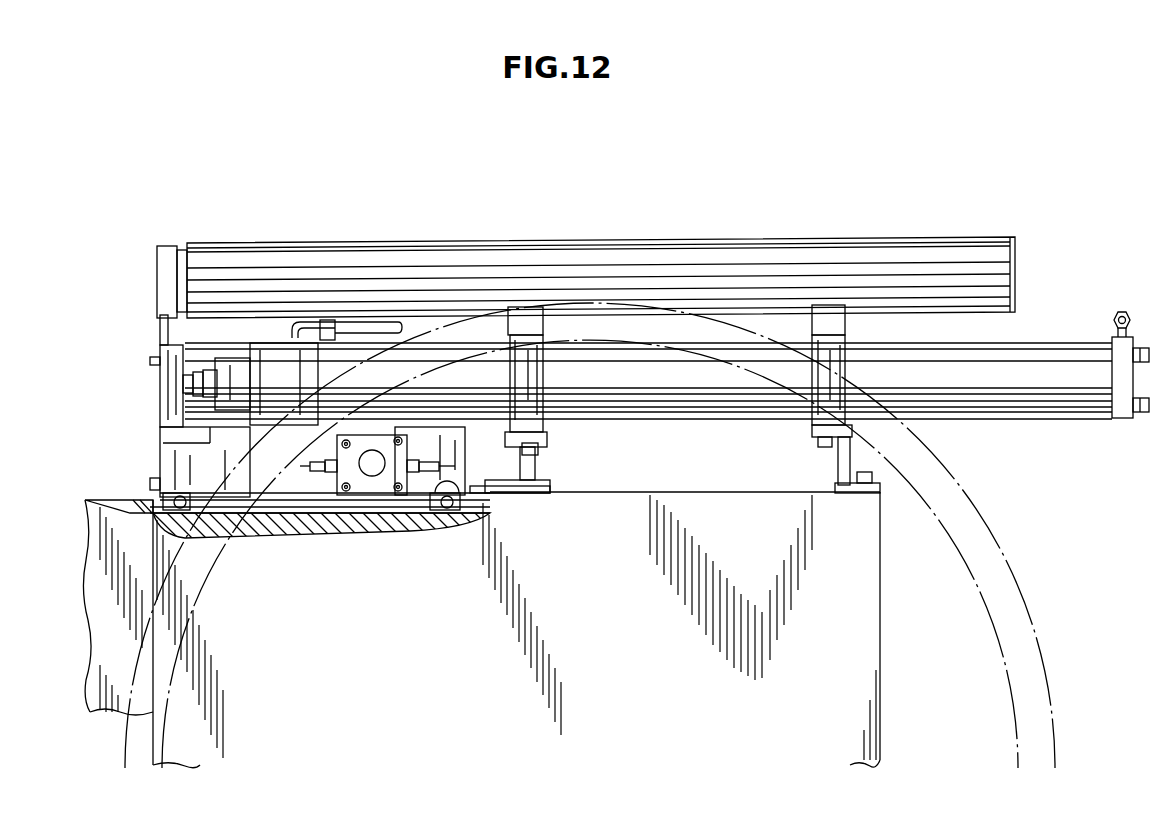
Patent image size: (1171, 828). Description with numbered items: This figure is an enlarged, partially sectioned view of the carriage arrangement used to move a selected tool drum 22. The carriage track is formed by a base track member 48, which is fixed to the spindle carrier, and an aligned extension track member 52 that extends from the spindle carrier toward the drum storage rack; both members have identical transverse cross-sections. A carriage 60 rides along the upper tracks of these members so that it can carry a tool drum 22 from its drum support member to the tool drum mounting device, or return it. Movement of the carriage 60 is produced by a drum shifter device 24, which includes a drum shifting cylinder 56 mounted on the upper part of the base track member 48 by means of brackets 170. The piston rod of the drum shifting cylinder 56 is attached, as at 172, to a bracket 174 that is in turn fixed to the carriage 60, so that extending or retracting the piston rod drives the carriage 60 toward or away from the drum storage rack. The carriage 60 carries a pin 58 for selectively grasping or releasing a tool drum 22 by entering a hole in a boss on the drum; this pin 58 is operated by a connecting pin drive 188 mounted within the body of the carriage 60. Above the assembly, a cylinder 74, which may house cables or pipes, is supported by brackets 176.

The tool drum 22 is at (977, 557).
The drum shifter device 24 is at (203, 222).
The base track member 48 is at (852, 600).
The extension track member 52 is at (130, 518).
The drum shifting cylinder 56 is at (890, 377).
The pin 58 is at (382, 457).
The carriage 60 is at (243, 470).
The cylinder 74 is at (663, 266).
The brackets 170 is at (508, 455).
The piston rod attachment 172 is at (197, 372).
The bracket 174 is at (207, 427).
The brackets 176 is at (527, 323).
The connecting pin drive 188 is at (397, 463).